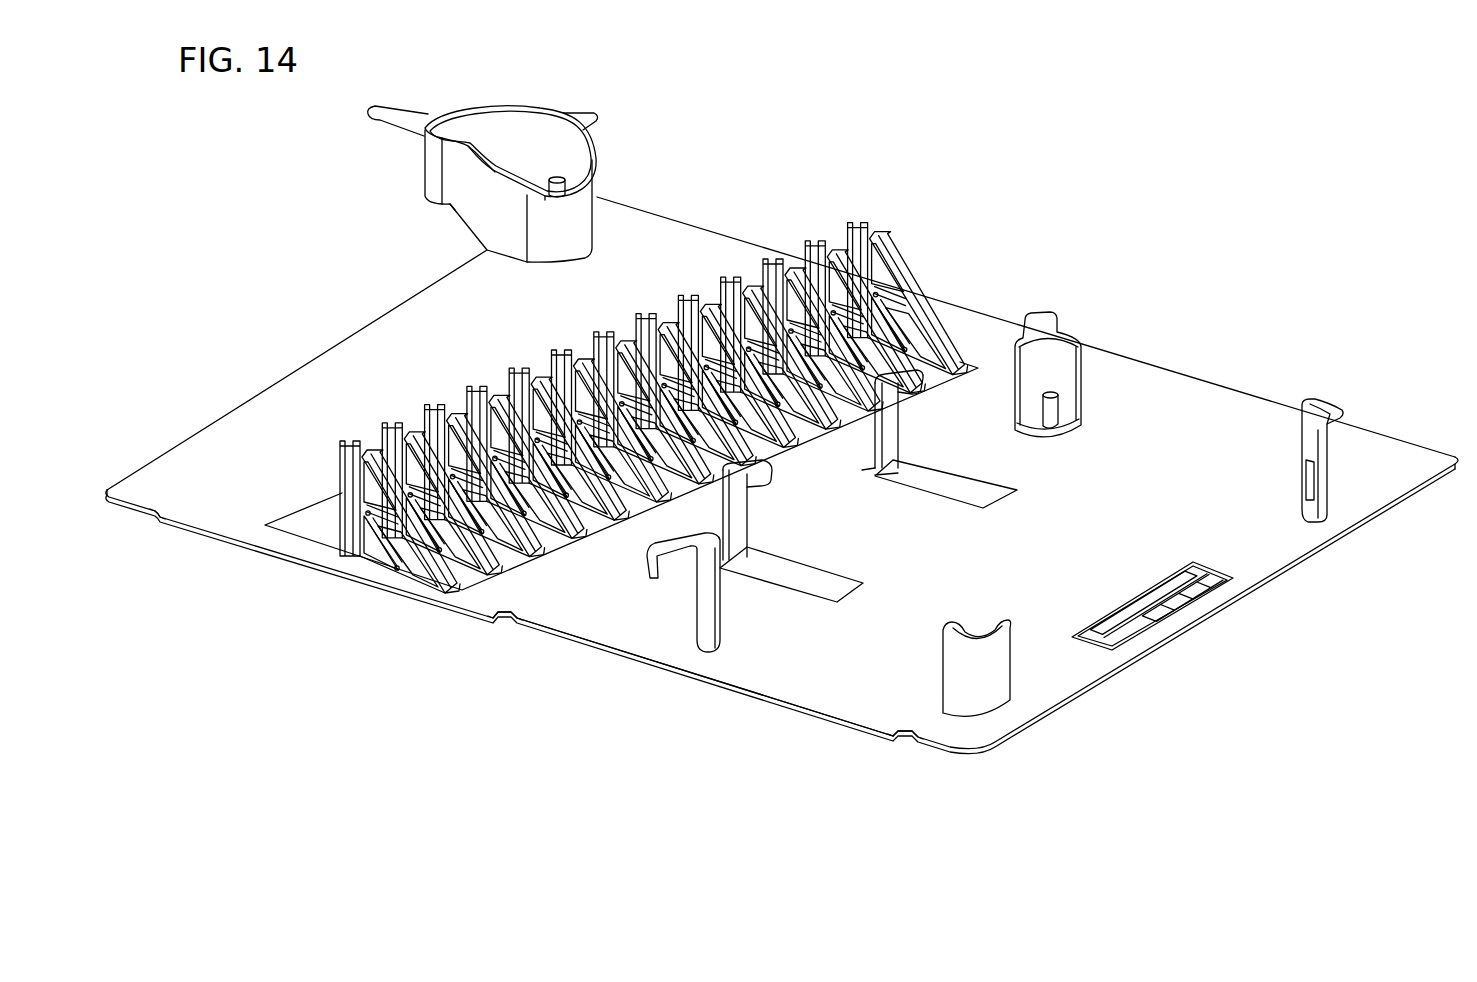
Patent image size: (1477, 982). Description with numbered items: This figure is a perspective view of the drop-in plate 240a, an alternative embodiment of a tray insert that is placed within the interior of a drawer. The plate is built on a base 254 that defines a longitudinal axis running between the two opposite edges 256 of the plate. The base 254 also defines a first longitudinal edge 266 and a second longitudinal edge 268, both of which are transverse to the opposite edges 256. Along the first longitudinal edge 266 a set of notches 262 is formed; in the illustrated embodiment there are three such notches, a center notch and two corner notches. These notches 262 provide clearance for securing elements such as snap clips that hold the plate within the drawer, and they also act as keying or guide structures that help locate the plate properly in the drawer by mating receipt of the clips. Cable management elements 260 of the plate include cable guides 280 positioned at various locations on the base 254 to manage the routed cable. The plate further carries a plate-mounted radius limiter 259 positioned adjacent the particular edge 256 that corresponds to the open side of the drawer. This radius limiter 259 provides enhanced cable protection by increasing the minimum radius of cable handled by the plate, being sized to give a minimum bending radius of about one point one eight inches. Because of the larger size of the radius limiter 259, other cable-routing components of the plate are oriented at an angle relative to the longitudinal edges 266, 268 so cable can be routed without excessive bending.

The base 254 is at (1213, 408).
The opposite edges 256 is at (373, 320).
The plate-mounted radius limiter 259 is at (596, 168).
The cable management elements 260 is at (610, 94).
The notches 262 is at (138, 508).
The first longitudinal edge 266 is at (675, 675).
The second longitudinal edge 268 is at (1163, 367).
The cable guides 280 is at (1055, 318).
The drop-in plate 240a is at (920, 228).